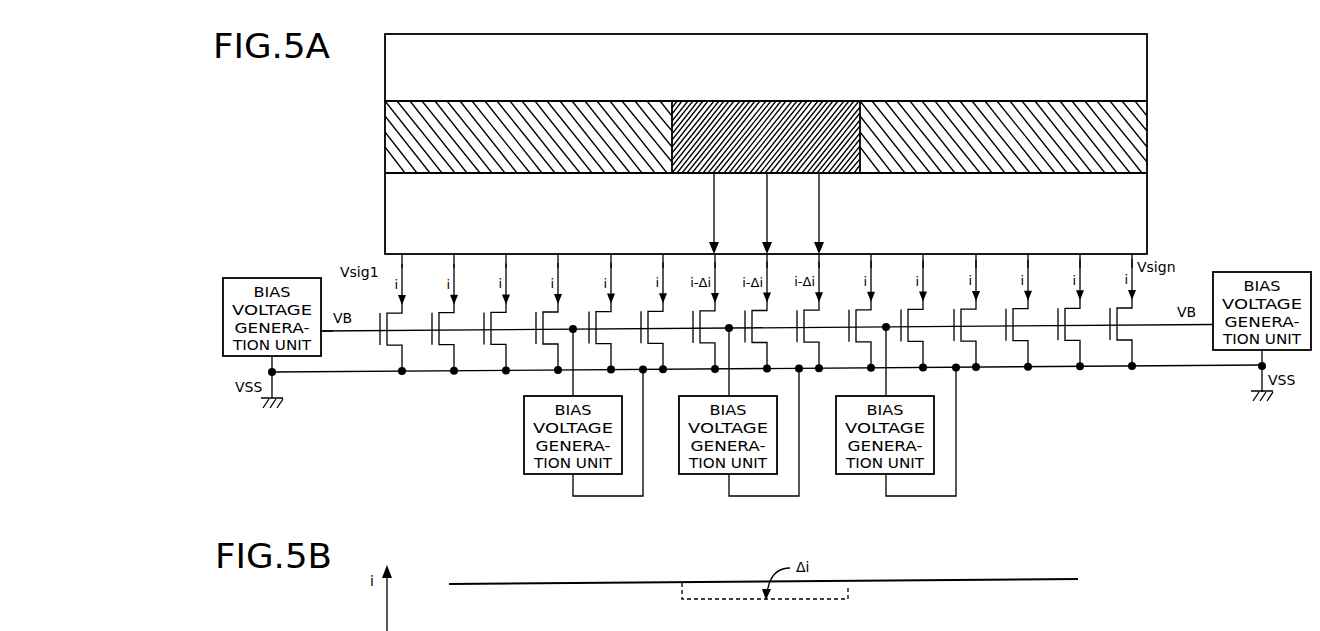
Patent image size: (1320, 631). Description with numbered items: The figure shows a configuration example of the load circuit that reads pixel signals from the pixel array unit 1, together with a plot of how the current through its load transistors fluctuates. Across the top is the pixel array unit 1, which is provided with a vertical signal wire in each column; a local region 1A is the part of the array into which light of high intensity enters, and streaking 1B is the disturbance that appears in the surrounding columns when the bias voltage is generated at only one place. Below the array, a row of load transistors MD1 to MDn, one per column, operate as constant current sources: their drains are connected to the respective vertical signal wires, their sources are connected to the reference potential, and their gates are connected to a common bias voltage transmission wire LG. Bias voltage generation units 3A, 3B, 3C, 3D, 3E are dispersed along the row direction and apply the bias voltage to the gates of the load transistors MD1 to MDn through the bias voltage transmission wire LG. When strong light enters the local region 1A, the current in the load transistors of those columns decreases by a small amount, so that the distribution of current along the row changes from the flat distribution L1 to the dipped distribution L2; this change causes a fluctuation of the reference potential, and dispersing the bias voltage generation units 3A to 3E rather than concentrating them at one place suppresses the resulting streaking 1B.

In FIG. 5A, the pixel array unit 1 is at (1147, 60).
In FIG. 5A, the local region 1A is at (764, 100).
In FIG. 5A, the streaking 1B is at (1001, 100).
In FIG. 5A, the bias voltage generation unit 3A is at (272, 278).
In FIG. 5A, the bias voltage generation unit 3B is at (551, 478).
In FIG. 5A, the bias voltage generation unit 3C is at (707, 478).
In FIG. 5A, the bias voltage generation unit 3D is at (862, 478).
In FIG. 5A, the bias voltage generation unit 3E is at (1262, 272).
In FIG. 5A, the load transistor MD1 is at (380, 342).
In FIG. 5A, the load transistor MDn is at (1118, 334).
In FIG. 5A, the bias voltage transmission wire LG is at (1093, 329).
In FIG. 5B, the current distribution L1 is at (973, 580).
In FIG. 5B, the current distribution L2 is at (850, 589).